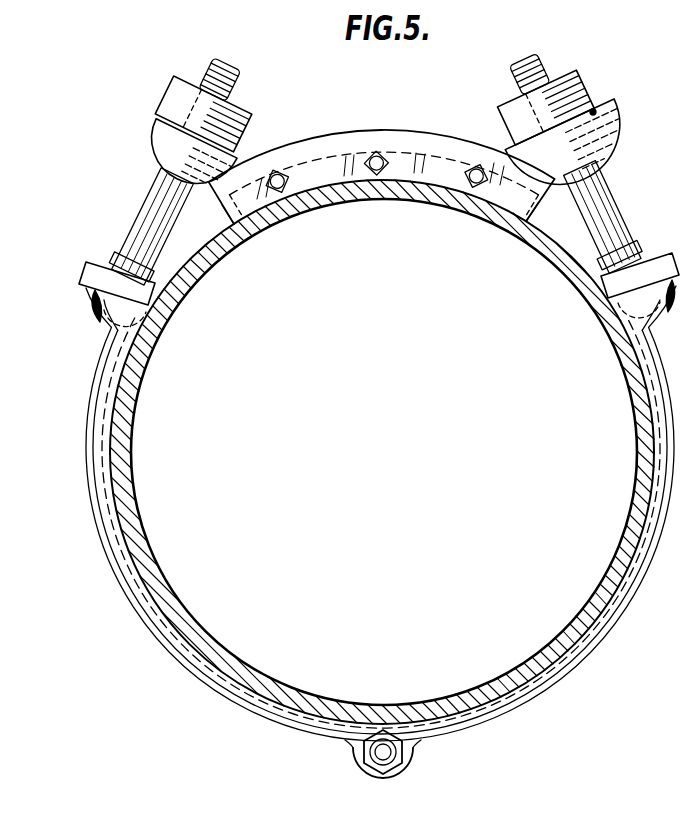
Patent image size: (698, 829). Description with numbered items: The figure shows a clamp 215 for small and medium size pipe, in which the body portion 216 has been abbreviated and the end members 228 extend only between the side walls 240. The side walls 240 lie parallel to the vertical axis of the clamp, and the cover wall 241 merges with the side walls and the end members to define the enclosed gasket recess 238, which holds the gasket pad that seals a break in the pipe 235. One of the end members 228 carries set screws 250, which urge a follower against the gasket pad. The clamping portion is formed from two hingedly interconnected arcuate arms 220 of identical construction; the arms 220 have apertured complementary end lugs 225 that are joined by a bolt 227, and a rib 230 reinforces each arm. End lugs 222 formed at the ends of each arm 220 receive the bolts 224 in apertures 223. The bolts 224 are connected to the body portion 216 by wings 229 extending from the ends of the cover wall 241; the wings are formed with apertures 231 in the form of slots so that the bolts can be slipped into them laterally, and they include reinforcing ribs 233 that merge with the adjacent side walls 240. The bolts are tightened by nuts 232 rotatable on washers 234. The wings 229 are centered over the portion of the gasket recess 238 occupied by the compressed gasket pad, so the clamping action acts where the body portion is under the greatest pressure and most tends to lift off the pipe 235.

The clamp 215 is at (470, 88).
The body portion 216 is at (272, 150).
The arcuate arms 220 is at (165, 632).
The end lugs 222 is at (96, 272).
The apertures 223 is at (92, 286).
The bolts 224 is at (143, 217).
The complementary end lugs 225 is at (408, 770).
The bolt 227 is at (388, 752).
The end members 228 is at (517, 208).
The wings 229 is at (156, 120).
The rib 230 is at (120, 585).
The apertures 231 is at (177, 138).
The nuts 232 is at (182, 98).
The reinforcing ribs 233 is at (604, 139).
The washers 234 is at (596, 111).
The pipe 235 is at (612, 348).
The gasket recess 238 is at (347, 204).
The side walls 240 is at (217, 205).
The cover wall 241 is at (311, 160).
The set screws 250 is at (377, 175).